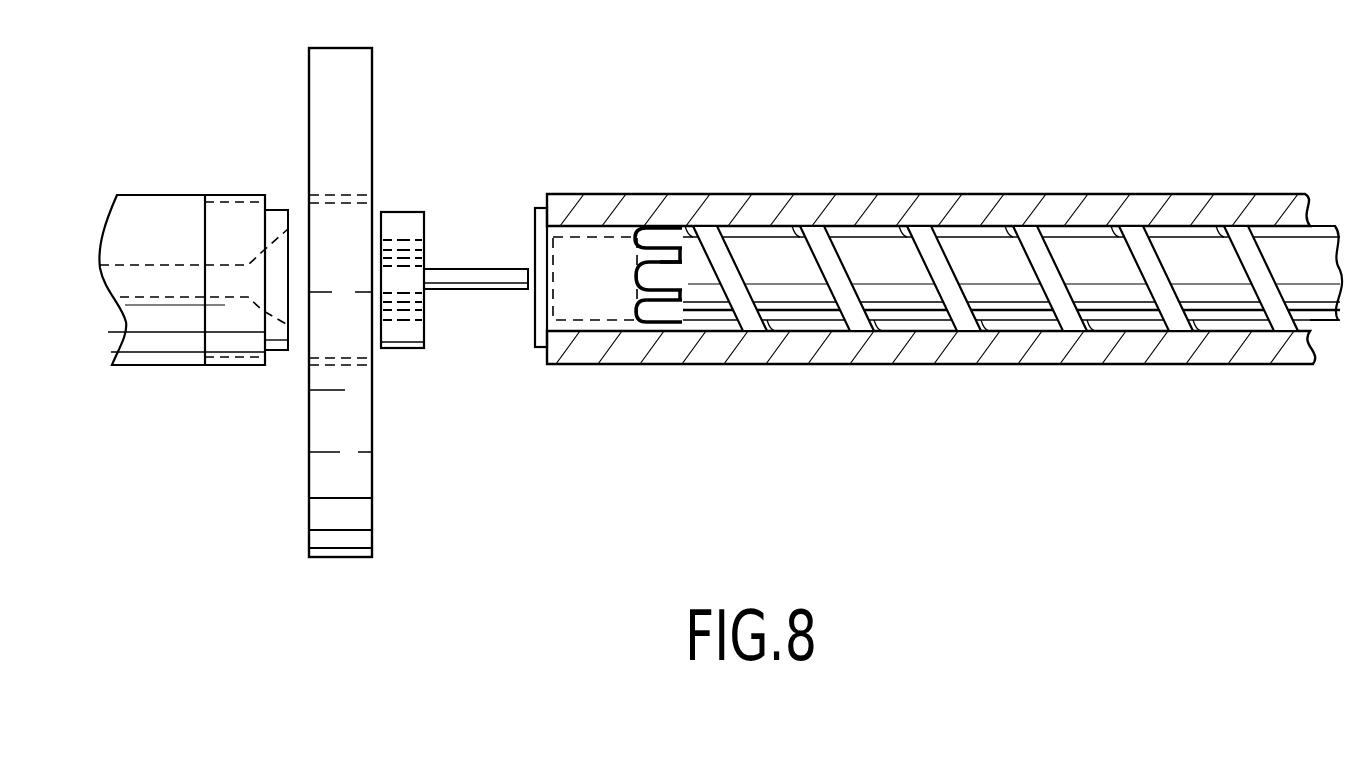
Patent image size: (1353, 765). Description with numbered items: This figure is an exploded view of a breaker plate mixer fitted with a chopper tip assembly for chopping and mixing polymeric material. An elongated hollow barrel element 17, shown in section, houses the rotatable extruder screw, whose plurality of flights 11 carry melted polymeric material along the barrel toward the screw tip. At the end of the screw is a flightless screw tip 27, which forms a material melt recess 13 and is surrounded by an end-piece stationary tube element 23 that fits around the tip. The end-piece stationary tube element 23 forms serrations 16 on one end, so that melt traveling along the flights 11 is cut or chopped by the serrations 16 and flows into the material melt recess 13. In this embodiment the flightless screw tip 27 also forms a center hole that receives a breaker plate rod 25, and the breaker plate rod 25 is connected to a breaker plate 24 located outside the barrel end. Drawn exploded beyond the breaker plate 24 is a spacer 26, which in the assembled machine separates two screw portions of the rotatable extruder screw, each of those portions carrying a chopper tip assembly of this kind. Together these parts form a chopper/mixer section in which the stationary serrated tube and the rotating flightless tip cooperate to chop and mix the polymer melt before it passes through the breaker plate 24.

The flights 11 is at (1046, 248).
The material melt recess 13 is at (678, 286).
The serrations 16 is at (660, 323).
The elongated hollow barrel element 17 is at (1020, 365).
The end-piece stationary tube element 23 is at (540, 365).
The breaker plate 24 is at (403, 348).
The breaker plate rod 25 is at (475, 292).
The spacer 26 is at (347, 557).
The flightless screw tip 27 is at (577, 225).